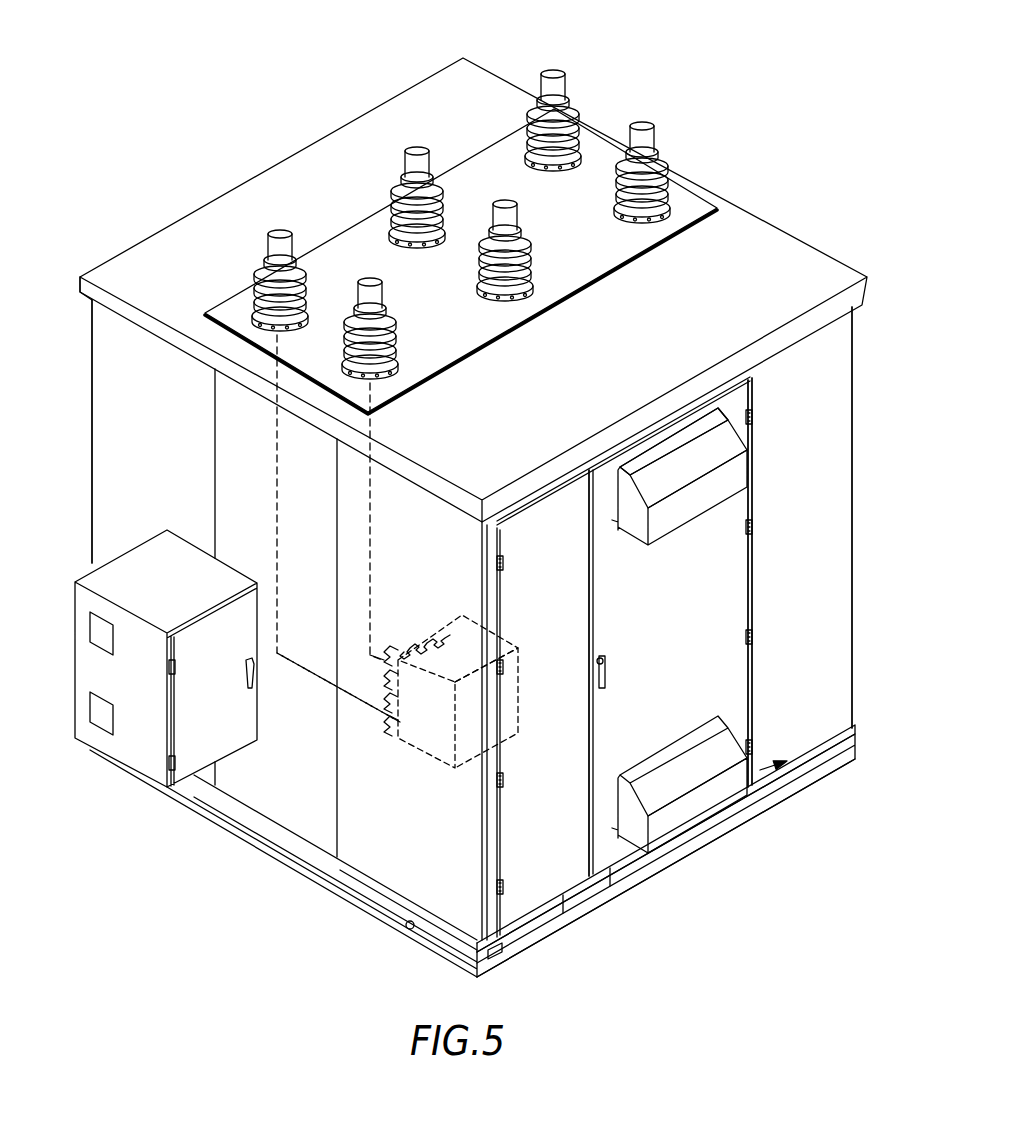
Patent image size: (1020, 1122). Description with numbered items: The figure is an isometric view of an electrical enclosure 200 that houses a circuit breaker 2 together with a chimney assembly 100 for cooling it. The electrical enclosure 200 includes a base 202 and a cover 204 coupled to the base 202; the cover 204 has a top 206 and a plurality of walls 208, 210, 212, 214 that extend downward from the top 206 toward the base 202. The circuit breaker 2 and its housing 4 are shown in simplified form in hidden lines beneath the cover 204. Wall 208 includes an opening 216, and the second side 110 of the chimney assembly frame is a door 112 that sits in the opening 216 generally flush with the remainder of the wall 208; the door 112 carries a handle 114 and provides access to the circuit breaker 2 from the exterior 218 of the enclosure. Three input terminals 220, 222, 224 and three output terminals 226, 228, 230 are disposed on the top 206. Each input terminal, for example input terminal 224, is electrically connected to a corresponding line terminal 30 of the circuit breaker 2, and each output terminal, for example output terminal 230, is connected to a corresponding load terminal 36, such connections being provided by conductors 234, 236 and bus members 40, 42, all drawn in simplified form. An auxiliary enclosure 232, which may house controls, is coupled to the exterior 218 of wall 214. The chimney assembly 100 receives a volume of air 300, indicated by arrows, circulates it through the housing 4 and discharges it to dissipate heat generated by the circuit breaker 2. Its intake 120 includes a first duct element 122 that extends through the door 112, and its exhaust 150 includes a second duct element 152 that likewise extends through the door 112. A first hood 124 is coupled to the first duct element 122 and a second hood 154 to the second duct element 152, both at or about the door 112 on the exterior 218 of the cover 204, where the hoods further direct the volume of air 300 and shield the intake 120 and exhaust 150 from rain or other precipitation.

The circuit breaker 2 is at (432, 730).
The housing 4 is at (474, 608).
The line terminal 30 is at (388, 730).
The load terminal 36 is at (392, 652).
The bus member 40 is at (378, 640).
The bus member 42 is at (324, 701).
The chimney assembly 100 is at (765, 665).
The second side 110 is at (680, 669).
The door 112 is at (745, 600).
The handle 114 is at (596, 675).
The intake 120 is at (803, 762).
The first duct element 122 is at (686, 735).
The first hood 124 is at (731, 753).
The exhaust 150 is at (772, 430).
The second duct element 152 is at (667, 435).
The second hood 154 is at (738, 475).
The electrical enclosure 200 is at (216, 887).
The base 202 is at (355, 883).
The cover 204 is at (78, 312).
The top 206 is at (200, 280).
The wall 208 is at (562, 534).
The wall 210 is at (853, 372).
The wall 212 is at (93, 362).
The wall 214 is at (168, 450).
The opening 216 is at (591, 588).
The exterior 218 is at (632, 915).
The input terminal 220 is at (553, 70).
The input terminal 222 is at (418, 150).
The input terminal 224 is at (280, 230).
The output terminal 226 is at (650, 136).
The output terminal 228 is at (512, 215).
The output terminal 230 is at (372, 284).
The auxiliary enclosure 232 is at (138, 560).
The conductor 234 is at (278, 462).
The conductor 236 is at (370, 543).
The volume of air 300 is at (710, 565).